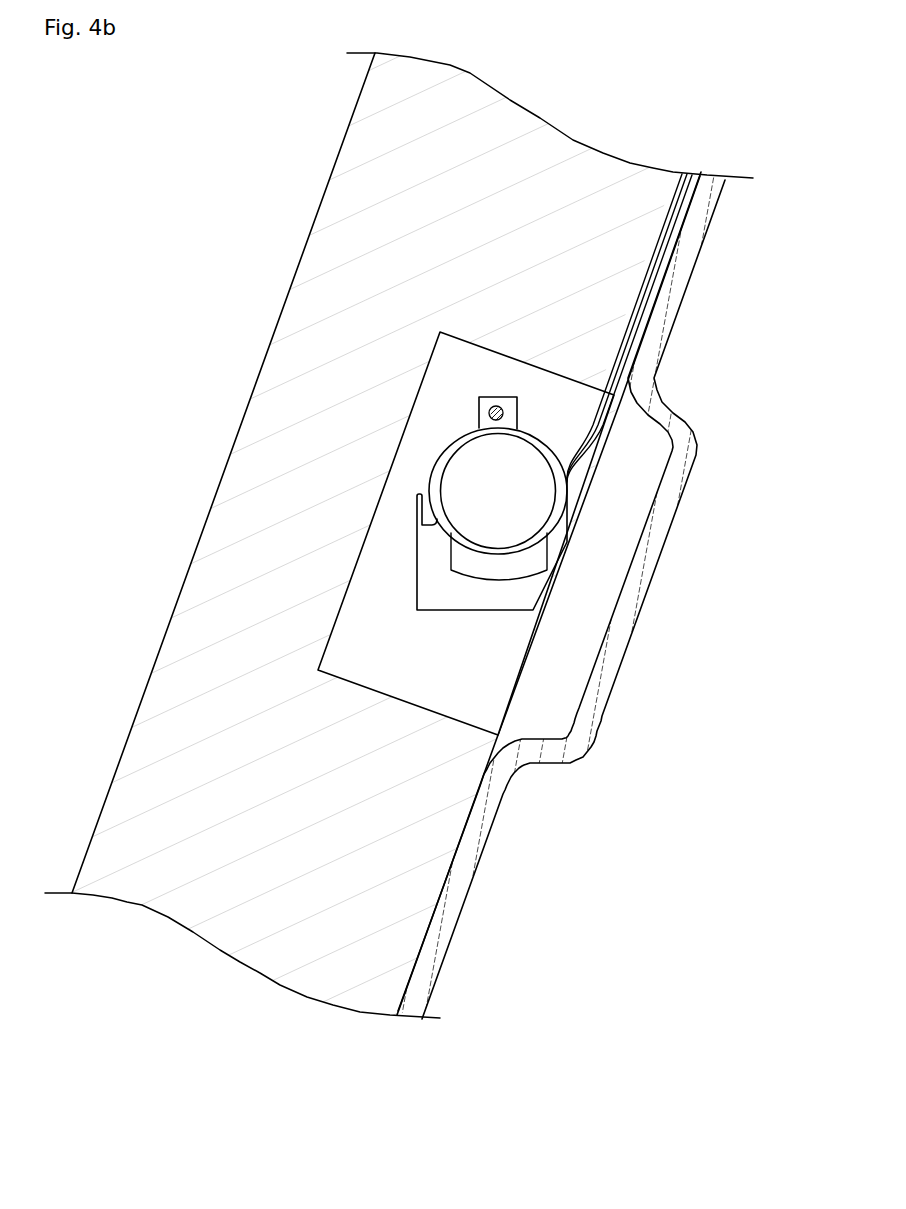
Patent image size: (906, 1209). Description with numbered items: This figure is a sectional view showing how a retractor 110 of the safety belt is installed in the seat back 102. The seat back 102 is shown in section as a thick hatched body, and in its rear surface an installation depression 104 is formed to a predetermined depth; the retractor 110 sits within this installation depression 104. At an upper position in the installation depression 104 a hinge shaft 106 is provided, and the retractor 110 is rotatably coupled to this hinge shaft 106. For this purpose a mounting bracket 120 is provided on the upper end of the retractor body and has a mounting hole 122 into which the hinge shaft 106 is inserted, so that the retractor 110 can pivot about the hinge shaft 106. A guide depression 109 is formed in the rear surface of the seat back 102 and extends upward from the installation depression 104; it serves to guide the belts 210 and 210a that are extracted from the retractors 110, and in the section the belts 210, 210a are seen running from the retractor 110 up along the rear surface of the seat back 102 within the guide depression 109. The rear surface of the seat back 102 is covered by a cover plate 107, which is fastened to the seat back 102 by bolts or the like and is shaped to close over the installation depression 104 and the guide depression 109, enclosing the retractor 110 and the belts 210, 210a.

The seat back 102 is at (303, 322).
The installation depression 104 is at (378, 628).
The hinge shaft 106 is at (502, 408).
The cover plate 107 is at (596, 690).
The guide depression 109 is at (666, 263).
The retractor 110 is at (559, 584).
The mounting bracket 120 is at (479, 404).
The mounting hole 122 is at (517, 404).
The belt 210 is at (592, 430).
The belt 210a is at (629, 328).